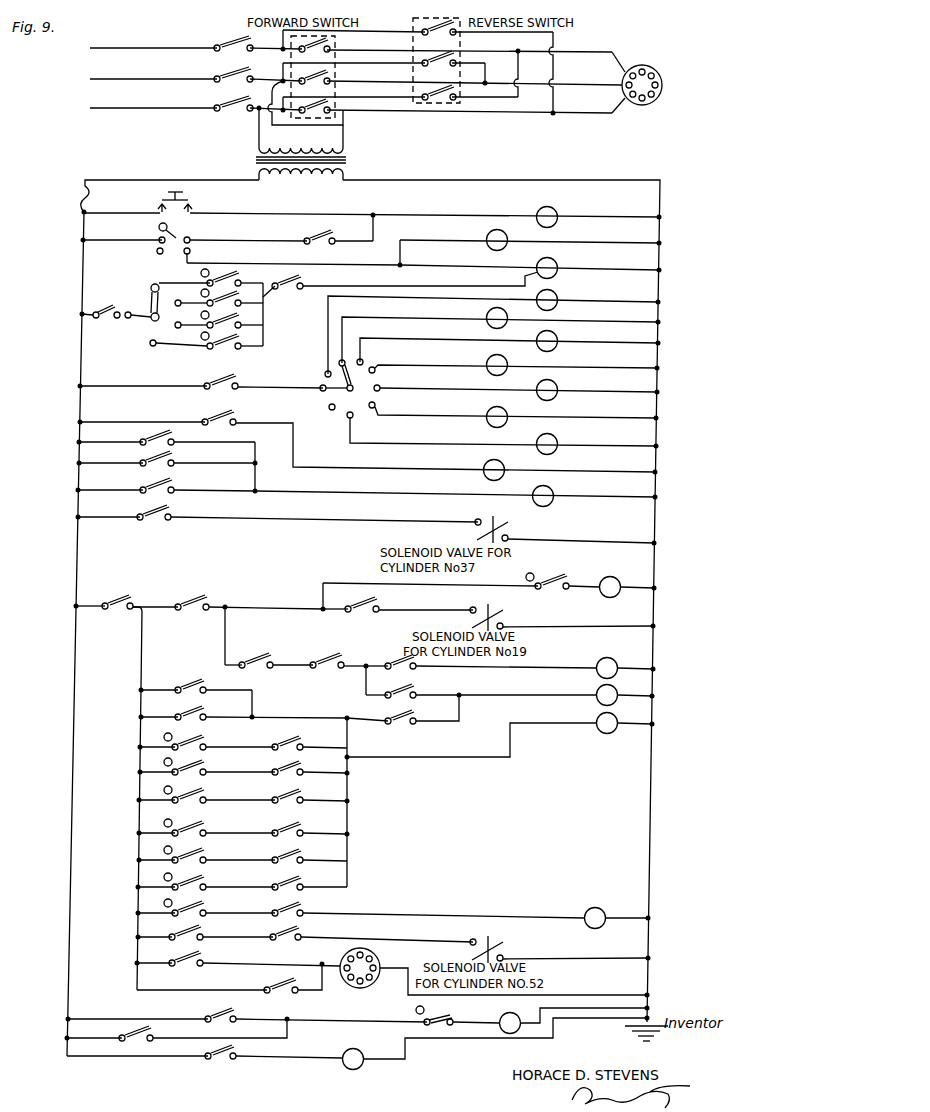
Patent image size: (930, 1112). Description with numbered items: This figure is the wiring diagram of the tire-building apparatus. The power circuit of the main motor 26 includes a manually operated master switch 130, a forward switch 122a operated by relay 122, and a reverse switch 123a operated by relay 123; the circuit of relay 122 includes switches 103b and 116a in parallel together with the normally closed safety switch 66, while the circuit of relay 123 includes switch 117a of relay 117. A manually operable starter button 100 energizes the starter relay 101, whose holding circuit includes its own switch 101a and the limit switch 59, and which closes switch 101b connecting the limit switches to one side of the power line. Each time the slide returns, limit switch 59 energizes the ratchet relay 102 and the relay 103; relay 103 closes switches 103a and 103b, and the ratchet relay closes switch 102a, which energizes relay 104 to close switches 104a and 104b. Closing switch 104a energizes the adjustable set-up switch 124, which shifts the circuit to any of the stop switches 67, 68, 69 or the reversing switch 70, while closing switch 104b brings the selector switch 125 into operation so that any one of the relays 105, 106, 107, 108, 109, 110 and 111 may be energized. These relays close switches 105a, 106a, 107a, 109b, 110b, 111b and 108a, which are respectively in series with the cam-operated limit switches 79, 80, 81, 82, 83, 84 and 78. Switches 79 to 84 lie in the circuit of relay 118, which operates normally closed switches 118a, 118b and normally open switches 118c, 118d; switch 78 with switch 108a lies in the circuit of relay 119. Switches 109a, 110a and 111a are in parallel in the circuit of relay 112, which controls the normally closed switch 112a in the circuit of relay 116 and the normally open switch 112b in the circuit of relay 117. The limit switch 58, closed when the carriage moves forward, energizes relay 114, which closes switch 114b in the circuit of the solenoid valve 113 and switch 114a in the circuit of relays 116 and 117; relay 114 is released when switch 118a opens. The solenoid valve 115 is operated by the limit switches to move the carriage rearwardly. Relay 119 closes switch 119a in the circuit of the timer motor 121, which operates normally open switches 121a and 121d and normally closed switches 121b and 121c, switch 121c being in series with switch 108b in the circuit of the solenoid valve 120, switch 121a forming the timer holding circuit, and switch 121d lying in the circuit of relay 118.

The master switch 130 is at (232, 109).
The forward switch 122a is at (336, 118).
The reverse switch 123a is at (440, 104).
The main motor 26 is at (662, 85).
The starter button 100 is at (184, 195).
The starter relay 101 is at (553, 210).
The limit switch 59 is at (164, 248).
The holding switch 101a is at (320, 245).
The ratchet relay 102 is at (487, 243).
The relay 103 is at (556, 262).
The set-up switch 124 is at (150, 302).
The stop switch 67 is at (237, 277).
The stop switch 68 is at (237, 297).
The stop switch 69 is at (237, 319).
The reversing switch 70 is at (237, 341).
The switch 103a is at (284, 292).
The normally open switch 104a is at (116, 323).
The relay 105 is at (556, 306).
The relay 106 is at (487, 322).
The relay 107 is at (556, 348).
The relay 108 is at (487, 368).
The normally open switch 104b is at (239, 382).
The relay 109 is at (556, 397).
The selector switch 125 is at (339, 394).
The switch 102a is at (226, 420).
The relay 110 is at (487, 420).
The switch 109a is at (153, 438).
The switch 110a is at (149, 460).
The relay 111 is at (556, 450).
The relay 104 is at (484, 467).
The switch 111a is at (149, 487).
The relay 112 is at (552, 500).
The switch 114b is at (150, 522).
The solenoid valve 113 is at (507, 531).
The relay 114 is at (610, 568).
The limit switch 58 is at (554, 590).
The normally closed switch 118a is at (190, 600).
The switch 101b is at (127, 611).
The normally closed switch 121c is at (368, 613).
The solenoid valve 115 is at (503, 614).
The normally closed switch 118b is at (270, 660).
The normally closed switch 112a is at (391, 661).
The relay 116 is at (608, 649).
The switch 114a is at (325, 672).
The normally open switch 121d is at (205, 687).
The normally open switch 112b is at (418, 687).
The relay 117 is at (597, 692).
The normally open switch 118c is at (205, 714).
The normally open switch 118d is at (398, 728).
The limit switch 79 is at (198, 741).
The switch 105a is at (295, 739).
The relay 118 is at (600, 734).
The limit switch 80 is at (198, 766).
The switch 106a is at (295, 764).
The limit switch 81 is at (198, 794).
The switch 107a is at (295, 792).
The limit switch 82 is at (198, 827).
The switch 109b is at (295, 825).
The limit switch 83 is at (198, 854).
The switch 110b is at (295, 852).
The limit switch 84 is at (198, 881).
The switch 111b is at (295, 879).
The limit switch 78 is at (198, 907).
The switch 108a is at (295, 905).
The relay 119 is at (591, 910).
The switch 108b is at (197, 929).
The normally closed switch 121b is at (295, 929).
The solenoid valve 120 is at (503, 946).
The switch 119a is at (197, 958).
The normally open switch 121a is at (276, 988).
The timer motor 121 is at (374, 983).
The switch 116a is at (222, 1011).
The safety switch 66 is at (451, 1011).
The relay 122 is at (504, 1013).
The switch 103b is at (155, 1035).
The switch 117a is at (216, 1060).
The relay 123 is at (360, 1067).